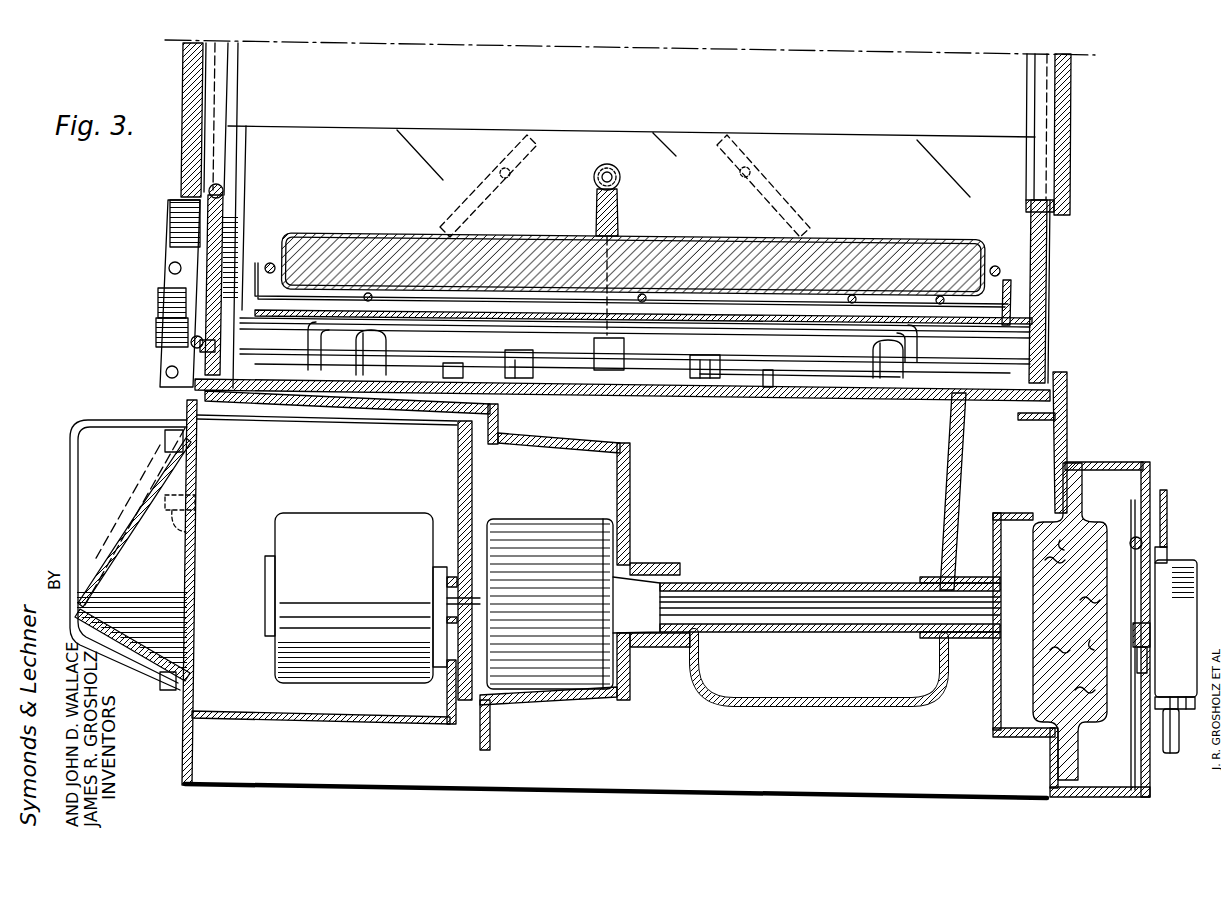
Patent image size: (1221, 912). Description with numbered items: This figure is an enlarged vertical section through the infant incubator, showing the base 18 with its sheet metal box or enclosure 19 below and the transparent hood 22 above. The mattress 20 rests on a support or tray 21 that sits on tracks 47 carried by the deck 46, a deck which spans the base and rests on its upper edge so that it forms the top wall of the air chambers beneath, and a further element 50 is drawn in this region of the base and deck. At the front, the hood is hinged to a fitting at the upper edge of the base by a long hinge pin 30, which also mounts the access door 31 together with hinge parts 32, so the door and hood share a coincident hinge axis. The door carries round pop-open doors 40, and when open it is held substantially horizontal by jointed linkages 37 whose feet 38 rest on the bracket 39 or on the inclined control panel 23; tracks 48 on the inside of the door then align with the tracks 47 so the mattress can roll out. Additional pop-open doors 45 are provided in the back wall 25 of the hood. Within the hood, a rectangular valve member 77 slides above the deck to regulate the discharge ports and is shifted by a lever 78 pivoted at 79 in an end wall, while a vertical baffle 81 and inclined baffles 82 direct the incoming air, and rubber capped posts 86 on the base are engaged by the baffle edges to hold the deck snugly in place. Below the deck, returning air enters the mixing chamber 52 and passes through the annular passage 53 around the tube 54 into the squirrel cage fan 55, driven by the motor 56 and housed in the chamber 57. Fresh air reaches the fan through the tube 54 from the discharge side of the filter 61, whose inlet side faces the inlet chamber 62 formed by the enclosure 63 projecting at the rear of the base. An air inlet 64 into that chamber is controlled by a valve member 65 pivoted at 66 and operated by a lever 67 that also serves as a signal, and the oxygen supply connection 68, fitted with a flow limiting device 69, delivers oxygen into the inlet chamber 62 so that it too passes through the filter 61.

The base 18 is at (968, 463).
The box or enclosure 19 is at (1068, 414).
The mattress 20 is at (852, 240).
The support or tray 21 is at (1012, 303).
The hood 22 is at (1052, 250).
The control panel 23 is at (150, 490).
The back wall 25 is at (1047, 286).
The hinge pin 30 is at (193, 343).
The access door 31 is at (180, 247).
The hinge parts 32 is at (198, 304).
The jointed linkage 37 is at (170, 279).
The foot 38 is at (160, 333).
The bracket 39 is at (186, 520).
The pop-open door 40 is at (185, 55).
The pop-open door 45 is at (1073, 131).
The deck 46 is at (803, 385).
The tracks or supports 47 is at (920, 352).
The supports or tracks 48 is at (239, 148).
The rail 50 is at (1005, 332).
The mixing chamber 52 is at (819, 581).
The annular passage 53 is at (700, 633).
The tube 54 is at (800, 582).
The radial or squirrel cage fan 55 is at (584, 518).
The motor 56 is at (355, 512).
The chamber 57 is at (442, 570).
The filter 61 is at (1045, 710).
The inlet chamber 62 is at (1095, 765).
The enclosure 63 is at (1155, 482).
The air inlet 64 is at (1131, 566).
The valve member 65 is at (1140, 607).
The pivot 66 is at (1134, 538).
The lever 67 is at (1167, 507).
The oxygen supply connection 68 is at (1175, 757).
The oxygen flow limiting device 69 is at (1180, 560).
The rectangular valve member 77 is at (633, 378).
The lever 78 is at (618, 213).
The pivot 79 is at (608, 163).
The baffle 81 is at (460, 128).
The baffles 82 is at (507, 165).
The posts 86 is at (387, 340).